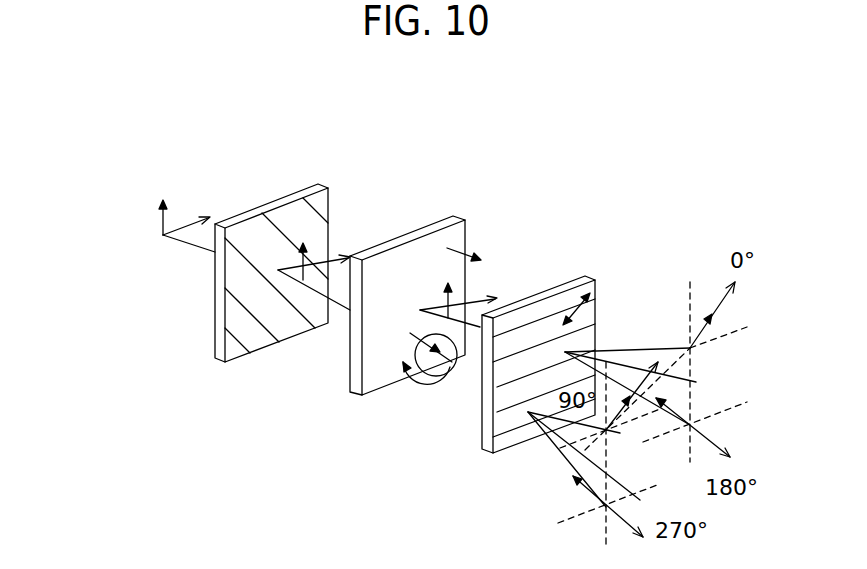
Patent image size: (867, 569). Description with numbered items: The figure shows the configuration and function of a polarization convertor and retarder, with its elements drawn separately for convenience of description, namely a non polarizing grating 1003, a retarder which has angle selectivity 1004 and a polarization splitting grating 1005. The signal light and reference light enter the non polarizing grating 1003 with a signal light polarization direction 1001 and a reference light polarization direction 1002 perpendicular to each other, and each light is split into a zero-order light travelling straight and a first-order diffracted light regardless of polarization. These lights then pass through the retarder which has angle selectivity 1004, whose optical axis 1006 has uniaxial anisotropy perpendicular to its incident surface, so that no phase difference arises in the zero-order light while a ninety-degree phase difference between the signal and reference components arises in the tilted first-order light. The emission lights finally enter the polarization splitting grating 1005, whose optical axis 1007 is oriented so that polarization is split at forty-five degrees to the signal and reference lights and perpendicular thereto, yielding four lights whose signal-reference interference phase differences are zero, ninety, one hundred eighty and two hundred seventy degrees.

The signal light polarization direction 1001 is at (160, 221).
The reference light polarization direction 1002 is at (189, 224).
The non polarizing grating 1003 is at (215, 355).
The retarder which has angle selectivity 1004 is at (353, 393).
The polarization splitting grating 1005 is at (480, 443).
The optical axis 1006 is at (457, 252).
The optical axis 1007 is at (565, 318).